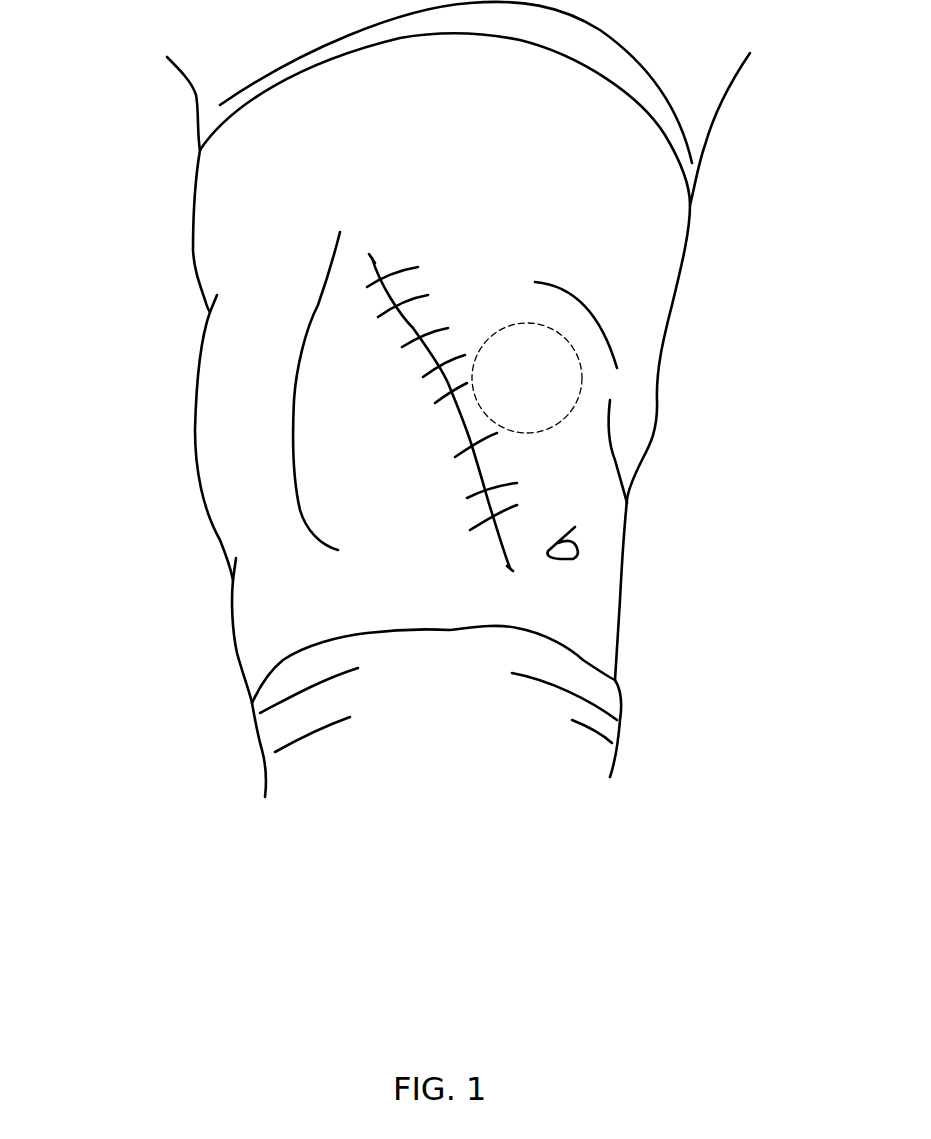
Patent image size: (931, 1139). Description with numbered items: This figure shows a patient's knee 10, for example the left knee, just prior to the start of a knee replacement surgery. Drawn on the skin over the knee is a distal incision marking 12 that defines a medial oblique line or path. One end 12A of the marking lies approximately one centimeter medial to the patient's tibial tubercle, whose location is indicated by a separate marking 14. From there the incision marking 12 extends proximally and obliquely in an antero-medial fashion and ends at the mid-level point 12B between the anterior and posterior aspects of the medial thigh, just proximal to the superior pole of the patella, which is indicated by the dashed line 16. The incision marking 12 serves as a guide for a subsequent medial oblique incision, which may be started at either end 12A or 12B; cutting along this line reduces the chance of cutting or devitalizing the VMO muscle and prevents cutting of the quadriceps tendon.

The patient's knee 10 is at (125, 238).
The distal incision marking 12 is at (415, 322).
The end of incision marking 12A is at (515, 570).
The mid-level point 12B is at (372, 258).
The tibial tubercle marking 14 is at (583, 547).
The dashed line indicating superior pole of patella 16 is at (582, 382).